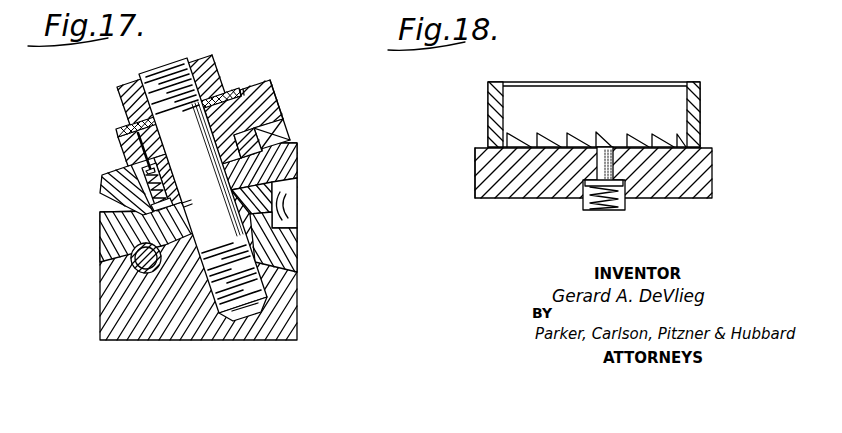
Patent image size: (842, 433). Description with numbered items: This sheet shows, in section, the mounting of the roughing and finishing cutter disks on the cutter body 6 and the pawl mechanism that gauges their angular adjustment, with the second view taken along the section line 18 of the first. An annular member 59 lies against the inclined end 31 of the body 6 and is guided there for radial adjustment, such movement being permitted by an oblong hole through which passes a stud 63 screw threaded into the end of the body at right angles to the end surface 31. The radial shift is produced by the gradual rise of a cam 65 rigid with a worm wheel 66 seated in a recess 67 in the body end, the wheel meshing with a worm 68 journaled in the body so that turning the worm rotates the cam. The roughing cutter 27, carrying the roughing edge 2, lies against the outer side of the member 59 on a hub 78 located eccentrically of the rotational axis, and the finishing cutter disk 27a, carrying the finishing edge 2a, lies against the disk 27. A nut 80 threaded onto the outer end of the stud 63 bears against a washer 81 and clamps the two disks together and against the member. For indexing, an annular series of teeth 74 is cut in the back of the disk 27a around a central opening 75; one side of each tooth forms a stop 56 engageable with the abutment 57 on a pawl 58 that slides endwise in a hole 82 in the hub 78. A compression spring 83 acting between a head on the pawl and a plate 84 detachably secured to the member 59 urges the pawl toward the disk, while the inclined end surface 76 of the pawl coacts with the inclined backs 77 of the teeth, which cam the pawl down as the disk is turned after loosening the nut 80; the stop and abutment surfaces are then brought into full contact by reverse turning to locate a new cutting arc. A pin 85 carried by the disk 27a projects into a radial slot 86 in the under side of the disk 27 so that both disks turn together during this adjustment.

In FIG. 17, the roughing edge 2 is at (112, 171).
In FIG. 17, the finishing edge 2a is at (272, 78).
In FIG. 17, the cutter body 6 is at (108, 292).
In FIG. 17, the section line 18— 18 is at (118, 70).
In FIG. 17, the roughing cutter 27 is at (115, 182).
In FIG. 17, the finishing cutter disk 27a is at (278, 100).
In FIG. 18, the finishing cutter disk 27a is at (701, 98).
In FIG. 17, the inclined end 31 is at (300, 160).
In FIG. 18, the stop 56 is at (565, 148).
In FIG. 18, the abutment 57 is at (592, 140).
In FIG. 17, the pawl 58 is at (146, 161).
In FIG. 18, the pawl 58 is at (612, 166).
In FIG. 17, the annular member 59 is at (112, 228).
In FIG. 17, the stud 63 is at (262, 315).
In FIG. 17, the cam 65 is at (270, 190).
In FIG. 17, the worm wheel 66 is at (256, 242).
In FIG. 17, the recess 67 is at (283, 210).
In FIG. 17, the worm 68 is at (140, 258).
In FIG. 18, the tooth 74 is at (549, 135).
In FIG. 18, the central opening 75 is at (642, 96).
In FIG. 18, the inclined end surface 76 is at (605, 138).
In FIG. 18, the inclined back 77 is at (620, 140).
In FIG. 17, the hub 78 is at (266, 142).
In FIG. 18, the hub 78 is at (712, 173).
In FIG. 17, the nut 80 is at (208, 62).
In FIG. 17, the washer 81 is at (228, 88).
In FIG. 17, the hole 82 is at (166, 178).
In FIG. 18, the hole 82 is at (598, 166).
In FIG. 17, the compression spring 83 is at (170, 196).
In FIG. 18, the compression spring 83 is at (602, 186).
In FIG. 17, the plate 84 is at (182, 213).
In FIG. 17, the pin 85 is at (272, 126).
In FIG. 17, the radial slot 86 is at (253, 87).